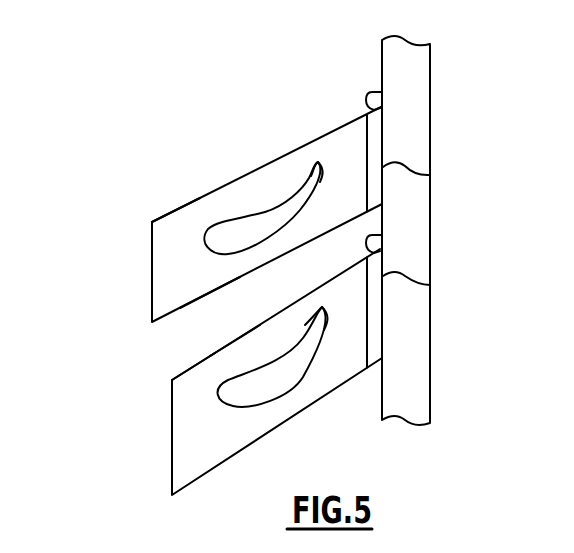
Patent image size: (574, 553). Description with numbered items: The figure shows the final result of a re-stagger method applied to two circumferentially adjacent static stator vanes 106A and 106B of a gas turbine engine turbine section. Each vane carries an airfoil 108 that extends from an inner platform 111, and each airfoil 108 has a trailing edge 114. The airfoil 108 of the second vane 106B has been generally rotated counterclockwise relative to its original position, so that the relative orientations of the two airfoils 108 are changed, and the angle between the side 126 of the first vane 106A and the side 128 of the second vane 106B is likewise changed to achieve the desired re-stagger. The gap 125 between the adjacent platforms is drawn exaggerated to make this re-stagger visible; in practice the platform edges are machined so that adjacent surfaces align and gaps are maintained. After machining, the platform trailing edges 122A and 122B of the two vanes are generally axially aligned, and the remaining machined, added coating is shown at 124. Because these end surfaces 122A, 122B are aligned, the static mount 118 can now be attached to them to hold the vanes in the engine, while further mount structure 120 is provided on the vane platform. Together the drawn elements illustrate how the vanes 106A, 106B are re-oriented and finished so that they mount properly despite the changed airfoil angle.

The stator vane 106A is at (128, 286).
The stator vane 106B is at (164, 440).
The airfoil 108 is at (265, 221).
The inner platform 111 is at (188, 230).
The trailing edge 114 is at (318, 160).
The static mount 118 is at (422, 60).
The mount structure 120 is at (150, 242).
The platform trailing edge 122A is at (430, 175).
The platform trailing edge 122B is at (430, 285).
The machined added coating 124 is at (382, 92).
The gap 125 is at (328, 277).
The side of vane 126 is at (203, 296).
The side of vane 128 is at (230, 342).